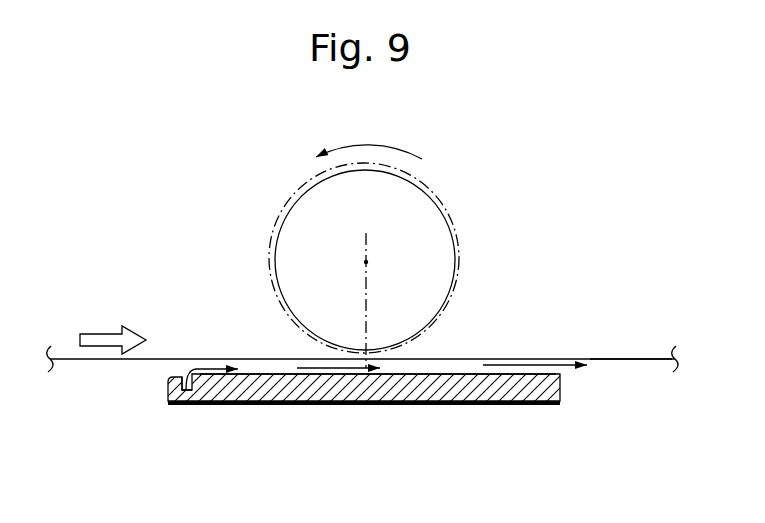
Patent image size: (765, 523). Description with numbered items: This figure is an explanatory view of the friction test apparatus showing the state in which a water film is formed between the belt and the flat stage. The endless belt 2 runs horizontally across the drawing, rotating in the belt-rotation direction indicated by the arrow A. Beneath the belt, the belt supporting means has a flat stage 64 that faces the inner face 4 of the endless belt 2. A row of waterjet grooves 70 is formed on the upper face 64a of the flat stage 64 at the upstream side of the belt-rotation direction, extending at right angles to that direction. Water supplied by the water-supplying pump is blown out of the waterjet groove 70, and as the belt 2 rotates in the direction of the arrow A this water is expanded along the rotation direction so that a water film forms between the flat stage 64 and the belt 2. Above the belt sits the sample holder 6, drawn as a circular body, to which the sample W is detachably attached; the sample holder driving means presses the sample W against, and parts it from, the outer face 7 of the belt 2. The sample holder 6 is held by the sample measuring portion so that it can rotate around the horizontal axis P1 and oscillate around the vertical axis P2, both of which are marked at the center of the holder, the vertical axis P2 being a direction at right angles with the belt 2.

The endless belt 2 is at (640, 352).
The inner face 4 is at (610, 360).
The sample holder 6 is at (440, 205).
The outer face 7 is at (592, 358).
The flat stage 64 is at (262, 372).
The upper face 64a is at (447, 372).
The waterjet groove 70 is at (207, 405).
The sample W is at (465, 237).
The horizontal axis P1 is at (364, 263).
The vertical axis P2 is at (369, 238).
The arrow A is at (113, 326).